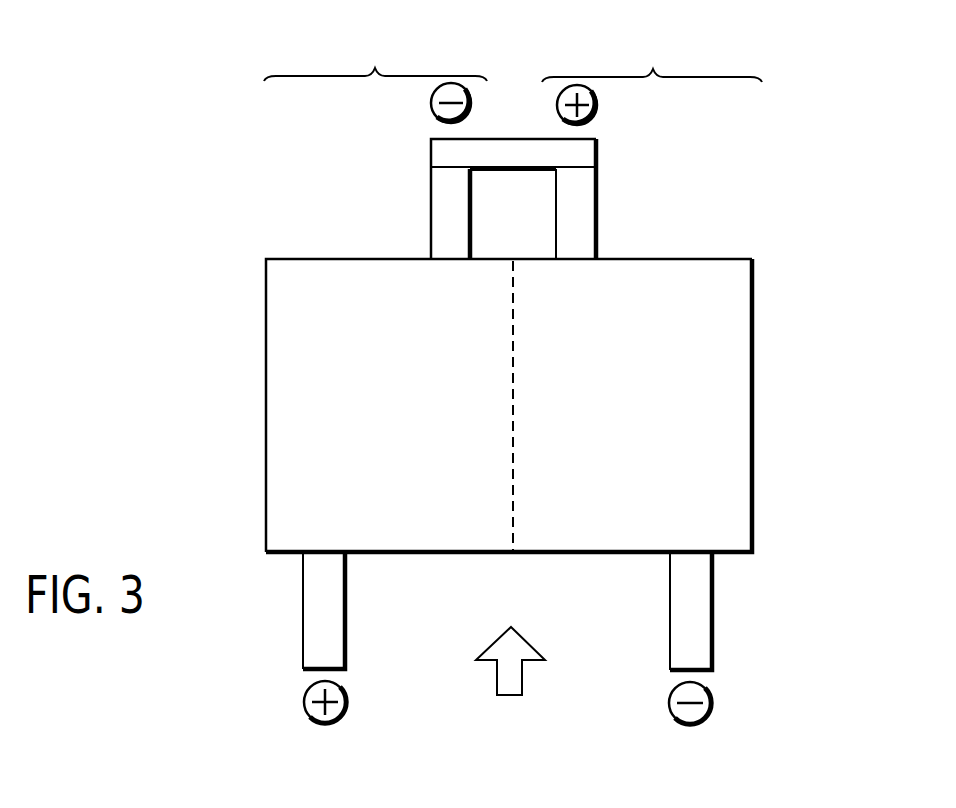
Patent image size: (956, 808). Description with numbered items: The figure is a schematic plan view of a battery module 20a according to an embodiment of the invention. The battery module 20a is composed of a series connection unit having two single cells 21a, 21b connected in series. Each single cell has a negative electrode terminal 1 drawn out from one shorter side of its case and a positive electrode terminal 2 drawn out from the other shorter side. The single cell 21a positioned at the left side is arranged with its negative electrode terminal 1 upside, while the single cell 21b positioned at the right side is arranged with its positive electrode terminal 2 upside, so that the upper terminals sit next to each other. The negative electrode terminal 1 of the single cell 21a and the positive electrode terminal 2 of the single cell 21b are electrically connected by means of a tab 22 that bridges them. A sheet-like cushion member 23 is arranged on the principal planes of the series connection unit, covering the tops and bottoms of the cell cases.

The negative electrode terminal 1 is at (447, 222).
The positive electrode terminal 2 is at (584, 222).
The battery module 20a is at (584, 23).
The single cell 21a is at (375, 76).
The single cell 21b is at (652, 78).
The tab 22 is at (585, 155).
The cushion member 23 is at (743, 404).